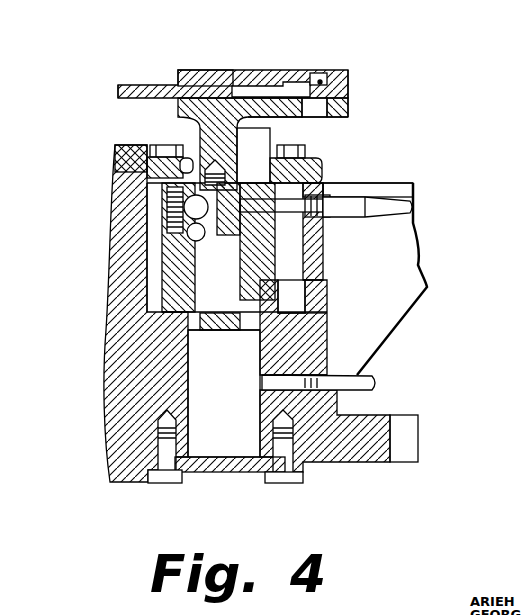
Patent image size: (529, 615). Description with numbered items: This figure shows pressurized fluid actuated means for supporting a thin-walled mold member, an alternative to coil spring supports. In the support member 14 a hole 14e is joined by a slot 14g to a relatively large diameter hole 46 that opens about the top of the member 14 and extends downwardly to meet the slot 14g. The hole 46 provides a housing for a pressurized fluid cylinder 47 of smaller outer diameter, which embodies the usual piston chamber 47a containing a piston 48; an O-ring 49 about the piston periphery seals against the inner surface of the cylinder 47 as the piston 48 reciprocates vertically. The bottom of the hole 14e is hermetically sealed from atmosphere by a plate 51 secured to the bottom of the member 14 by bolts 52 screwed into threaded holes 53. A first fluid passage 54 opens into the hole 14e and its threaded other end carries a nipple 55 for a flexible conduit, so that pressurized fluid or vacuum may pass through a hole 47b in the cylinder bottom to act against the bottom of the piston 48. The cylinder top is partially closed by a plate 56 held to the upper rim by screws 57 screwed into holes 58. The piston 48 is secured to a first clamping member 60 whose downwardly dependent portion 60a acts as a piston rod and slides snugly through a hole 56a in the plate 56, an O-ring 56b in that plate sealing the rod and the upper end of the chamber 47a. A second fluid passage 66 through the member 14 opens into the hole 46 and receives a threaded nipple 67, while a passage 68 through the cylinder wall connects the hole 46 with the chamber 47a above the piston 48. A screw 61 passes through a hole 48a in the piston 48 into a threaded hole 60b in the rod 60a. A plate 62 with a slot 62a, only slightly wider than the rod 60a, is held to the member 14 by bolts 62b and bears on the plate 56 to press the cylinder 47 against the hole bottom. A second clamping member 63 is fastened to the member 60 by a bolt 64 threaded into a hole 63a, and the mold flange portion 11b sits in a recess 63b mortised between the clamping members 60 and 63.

The member 14 is at (163, 395).
The annular flange portion 11b is at (145, 85).
The recess 63b is at (207, 84).
The second clamping member 63 is at (250, 70).
The hole 63a is at (323, 73).
The first clamping member 60 is at (348, 92).
The screw or bolt 64 is at (318, 110).
The downwardly dependent portion 60a is at (130, 104).
The hole 60b is at (200, 122).
The plate 62 is at (120, 144).
The slot 62a is at (150, 152).
The bolts 62b is at (305, 152).
The plate 56 is at (295, 157).
The piston 48 is at (248, 183).
The pressurized fluid cylinder 47 is at (323, 250).
The fluid passage 68 is at (323, 192).
The piston chamber 47a is at (323, 282).
The hole 46 is at (305, 302).
The second fluid conduit or passage 66 is at (325, 220).
The nipple 67 is at (414, 208).
The hole 56a is at (185, 240).
The O-ring 56b is at (175, 185).
The screws 57 is at (175, 193).
The holes 58 is at (205, 180).
The hole 48a is at (200, 262).
The O-ring 49 is at (245, 245).
The bolt or screw 61 is at (226, 222).
The hole 47b is at (205, 322).
The hole 14e is at (183, 364).
The holes 53 is at (275, 440).
The slot 14g is at (298, 327).
The first fluid conduit or passage 54 is at (298, 375).
The nipple 55 is at (375, 383).
The plate 51 is at (222, 473).
The bolts 52 is at (283, 486).